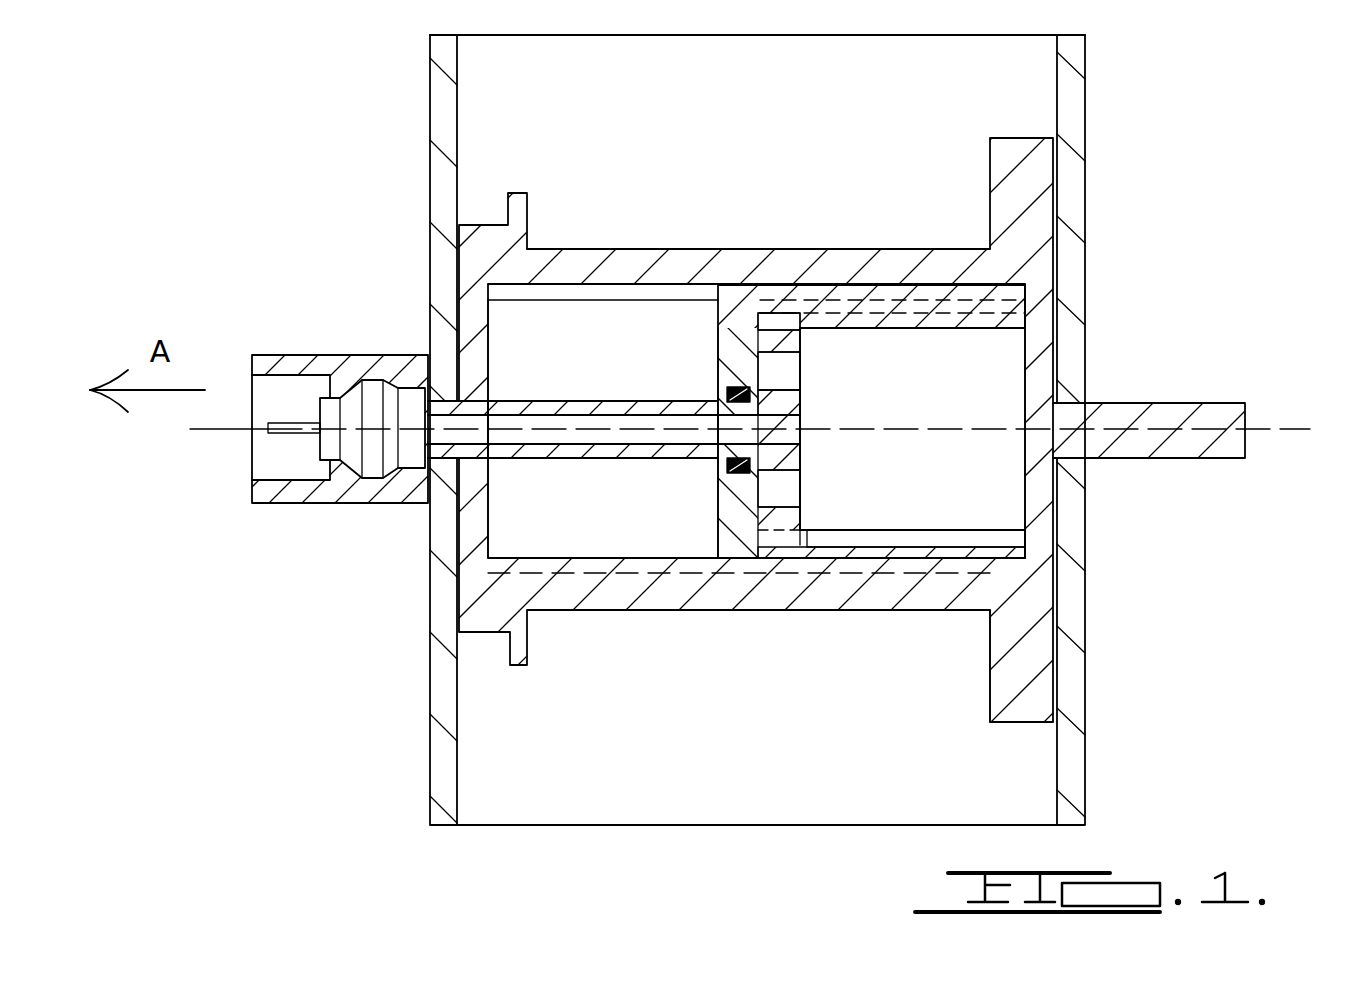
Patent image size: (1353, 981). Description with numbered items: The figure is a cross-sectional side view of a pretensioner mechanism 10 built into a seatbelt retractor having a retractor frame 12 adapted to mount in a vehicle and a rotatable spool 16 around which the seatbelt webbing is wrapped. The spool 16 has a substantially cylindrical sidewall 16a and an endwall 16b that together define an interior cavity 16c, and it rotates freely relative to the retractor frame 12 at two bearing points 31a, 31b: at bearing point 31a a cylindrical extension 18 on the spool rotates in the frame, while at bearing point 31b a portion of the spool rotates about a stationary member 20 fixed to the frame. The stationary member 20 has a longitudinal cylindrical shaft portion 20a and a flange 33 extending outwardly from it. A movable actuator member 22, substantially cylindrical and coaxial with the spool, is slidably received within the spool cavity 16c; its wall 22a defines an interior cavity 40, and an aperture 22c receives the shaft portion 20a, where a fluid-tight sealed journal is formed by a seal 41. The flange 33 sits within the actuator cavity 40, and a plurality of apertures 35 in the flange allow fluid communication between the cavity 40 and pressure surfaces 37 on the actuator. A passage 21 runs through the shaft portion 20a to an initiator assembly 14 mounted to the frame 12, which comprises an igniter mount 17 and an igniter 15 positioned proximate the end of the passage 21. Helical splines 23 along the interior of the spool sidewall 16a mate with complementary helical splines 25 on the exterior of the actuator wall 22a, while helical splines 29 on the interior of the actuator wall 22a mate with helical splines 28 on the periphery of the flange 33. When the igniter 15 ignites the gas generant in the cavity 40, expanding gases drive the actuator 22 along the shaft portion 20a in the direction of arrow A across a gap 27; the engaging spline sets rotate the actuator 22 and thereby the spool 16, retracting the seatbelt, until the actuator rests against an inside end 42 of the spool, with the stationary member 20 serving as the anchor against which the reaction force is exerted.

The pretensioner mechanism 10 is at (1257, 163).
The retractor frame 12 is at (1070, 600).
The initiator assembly 14 is at (342, 458).
The igniter 15 is at (352, 403).
The spool 16 is at (822, 578).
The sidewall 16a is at (885, 263).
The endwall 16b is at (1045, 300).
The interior cavity 16c is at (570, 347).
The igniter mount 17 is at (280, 493).
The cylindrical extension 18 is at (1215, 447).
The stationary member 20 is at (563, 450).
The shaft portion 20a is at (722, 417).
The passage 21 is at (640, 440).
The actuator member 22 is at (738, 310).
The actuator wall 22a is at (940, 303).
The aperture 22c is at (707, 463).
The helical splines 23 is at (590, 292).
The helical splines 25 is at (960, 567).
The gap 27 is at (803, 337).
The helical splines 28 is at (780, 320).
The helical splines 29 is at (888, 537).
The bearing point 31a is at (1061, 386).
The bearing point 31b is at (434, 392).
The flange 33 is at (787, 530).
The apertures 35 is at (785, 488).
The pressure surfaces 37 is at (763, 377).
The interior cavity 40 is at (980, 474).
The seal 41 is at (725, 393).
The inside end 42 is at (495, 328).